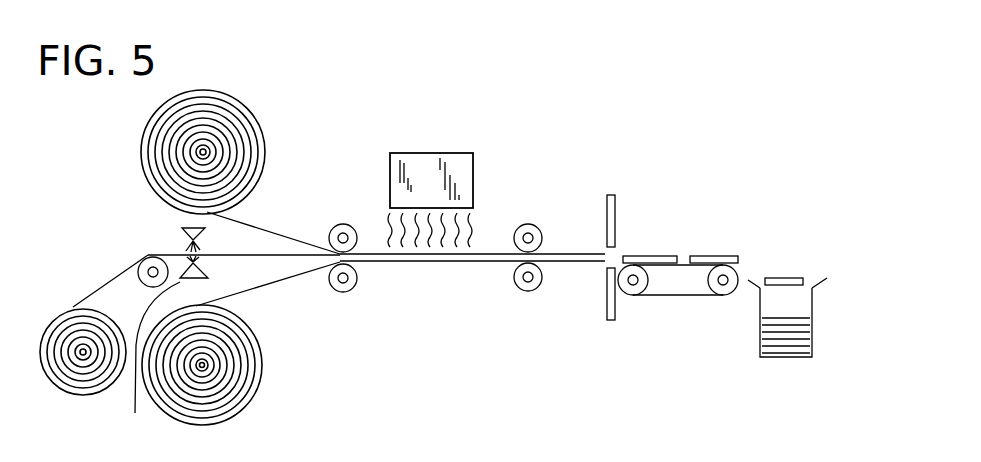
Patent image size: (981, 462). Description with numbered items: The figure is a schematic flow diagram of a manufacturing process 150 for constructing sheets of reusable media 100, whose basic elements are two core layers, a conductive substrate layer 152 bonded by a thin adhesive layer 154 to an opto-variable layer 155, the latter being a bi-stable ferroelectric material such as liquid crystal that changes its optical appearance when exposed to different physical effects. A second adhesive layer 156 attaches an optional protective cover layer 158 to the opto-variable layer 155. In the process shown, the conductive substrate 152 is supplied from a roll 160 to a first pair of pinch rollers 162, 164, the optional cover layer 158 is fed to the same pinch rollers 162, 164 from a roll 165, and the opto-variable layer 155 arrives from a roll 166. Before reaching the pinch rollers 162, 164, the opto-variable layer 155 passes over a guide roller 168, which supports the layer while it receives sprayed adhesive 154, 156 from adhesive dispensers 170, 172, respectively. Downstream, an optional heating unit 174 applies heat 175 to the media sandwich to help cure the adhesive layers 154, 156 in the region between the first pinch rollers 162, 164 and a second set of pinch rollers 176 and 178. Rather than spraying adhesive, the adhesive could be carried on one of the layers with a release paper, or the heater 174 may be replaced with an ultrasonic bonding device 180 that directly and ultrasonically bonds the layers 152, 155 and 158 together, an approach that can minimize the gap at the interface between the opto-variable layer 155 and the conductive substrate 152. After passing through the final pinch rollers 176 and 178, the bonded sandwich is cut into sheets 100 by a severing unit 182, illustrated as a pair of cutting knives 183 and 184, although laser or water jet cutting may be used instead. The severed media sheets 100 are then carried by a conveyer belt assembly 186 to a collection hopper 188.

The reusable media 100 is at (782, 278).
The manufacturing process 150 is at (730, 112).
The conductive substrate layer 152 is at (302, 273).
The adhesive layer 154 is at (211, 265).
The opto-variable layer 155 is at (95, 292).
The second adhesive layer 156 is at (177, 242).
The protective cover layer 158 is at (260, 223).
The roll 160 is at (252, 370).
The pinch roller 162 is at (350, 283).
The pinch roller 164 is at (343, 224).
The roll 165 is at (243, 120).
The roll 166 is at (77, 375).
The guide roller 168 is at (148, 279).
The adhesive dispenser 170 is at (151, 360).
The adhesive dispenser 172 is at (183, 228).
The heating unit 174 is at (458, 156).
The heat 175 is at (480, 221).
The pinch roller 176 is at (522, 282).
The pinch roller 178 is at (533, 232).
The ultrasonic bonding device 180 is at (422, 168).
The severing unit 182 is at (614, 229).
The cutting knife 183 is at (617, 217).
The cutting knife 184 is at (605, 300).
The conveyer belt assembly 186 is at (675, 302).
The collection hopper 188 is at (812, 308).